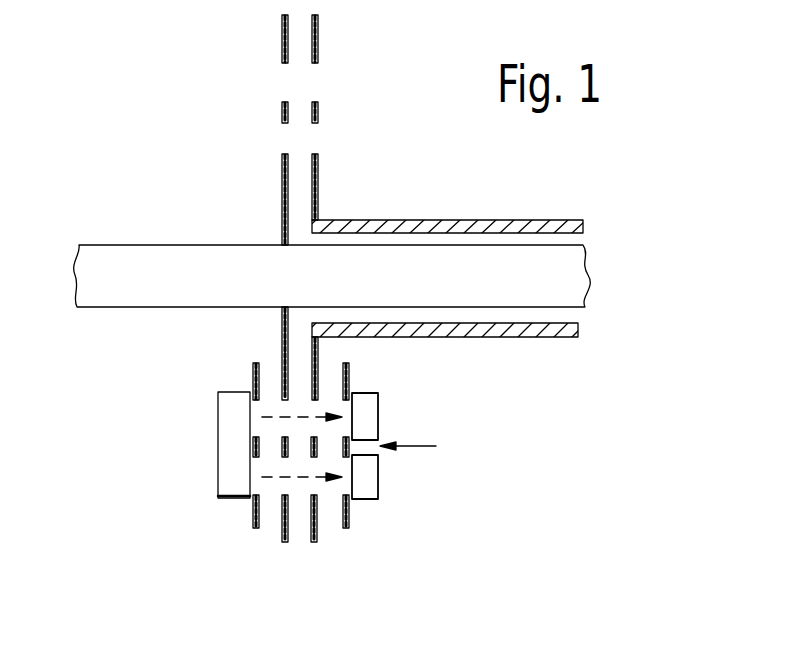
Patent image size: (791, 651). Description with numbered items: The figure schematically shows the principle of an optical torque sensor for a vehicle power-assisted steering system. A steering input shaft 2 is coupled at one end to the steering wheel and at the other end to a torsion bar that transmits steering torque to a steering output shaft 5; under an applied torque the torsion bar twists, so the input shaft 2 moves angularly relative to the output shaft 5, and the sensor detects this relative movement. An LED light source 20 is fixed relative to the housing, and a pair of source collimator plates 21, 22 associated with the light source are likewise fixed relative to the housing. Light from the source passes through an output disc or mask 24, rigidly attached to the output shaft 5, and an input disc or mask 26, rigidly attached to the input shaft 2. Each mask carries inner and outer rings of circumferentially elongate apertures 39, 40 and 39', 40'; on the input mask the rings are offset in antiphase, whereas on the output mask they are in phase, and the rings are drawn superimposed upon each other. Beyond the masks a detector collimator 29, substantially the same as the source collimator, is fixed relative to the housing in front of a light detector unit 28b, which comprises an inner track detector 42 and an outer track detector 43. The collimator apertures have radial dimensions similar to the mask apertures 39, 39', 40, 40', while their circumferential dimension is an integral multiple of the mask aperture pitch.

The steering input shaft 2 is at (505, 228).
The steering output shaft 5 is at (358, 267).
The LED light source 20 is at (228, 455).
The source collimator plate 21 is at (239, 480).
The source collimator plate 22 is at (258, 518).
The output disc or mask 24 is at (288, 528).
The input disc or mask 26 is at (318, 530).
The light detector unit 28b is at (433, 444).
The detector collimator 29 is at (350, 525).
The aperture 39 is at (358, 372).
The aperture 39' is at (221, 357).
The aperture 40 is at (356, 467).
The aperture 40' is at (244, 510).
The inner track detector 42 is at (372, 418).
The outer track detector 43 is at (360, 488).